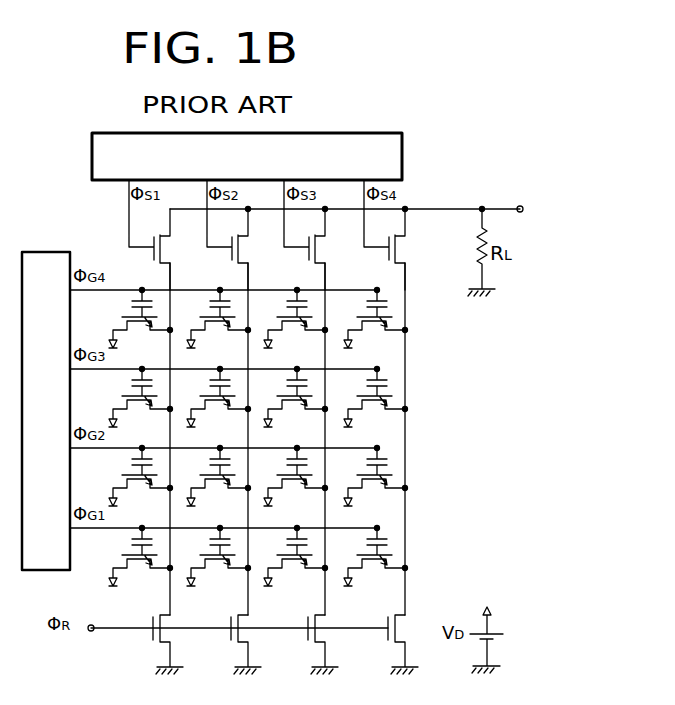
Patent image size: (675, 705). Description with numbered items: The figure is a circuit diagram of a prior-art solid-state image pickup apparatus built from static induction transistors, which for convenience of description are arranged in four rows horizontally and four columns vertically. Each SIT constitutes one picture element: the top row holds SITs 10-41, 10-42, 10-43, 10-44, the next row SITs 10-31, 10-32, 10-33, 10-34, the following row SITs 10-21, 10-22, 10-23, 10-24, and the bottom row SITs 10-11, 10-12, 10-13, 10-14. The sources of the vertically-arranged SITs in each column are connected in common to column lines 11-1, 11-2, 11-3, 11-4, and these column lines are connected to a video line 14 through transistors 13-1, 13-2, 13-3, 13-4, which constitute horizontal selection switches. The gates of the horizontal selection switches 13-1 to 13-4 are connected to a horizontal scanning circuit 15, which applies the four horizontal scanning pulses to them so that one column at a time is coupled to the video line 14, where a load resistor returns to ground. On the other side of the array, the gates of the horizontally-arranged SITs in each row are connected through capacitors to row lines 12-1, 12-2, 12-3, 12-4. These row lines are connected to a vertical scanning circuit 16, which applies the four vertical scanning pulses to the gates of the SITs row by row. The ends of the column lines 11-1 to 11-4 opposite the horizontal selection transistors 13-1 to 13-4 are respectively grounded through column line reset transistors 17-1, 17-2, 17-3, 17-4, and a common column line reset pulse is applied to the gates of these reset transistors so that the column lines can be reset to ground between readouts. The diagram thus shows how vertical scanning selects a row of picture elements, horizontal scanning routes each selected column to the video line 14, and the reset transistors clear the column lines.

The horizontal scanning circuit 15 is at (405, 153).
The vertical scanning circuit 16 is at (47, 250).
The video line 14 is at (444, 208).
The transistor (horizontal selection switch) 13-1 is at (184, 247).
The transistor (horizontal selection switch) 13-2 is at (262, 247).
The transistor (horizontal selection switch) 13-3 is at (339, 247).
The transistor (horizontal selection switch) 13-4 is at (403, 251).
The column line 11-1 is at (172, 273).
The column line 11-2 is at (250, 273).
The column line 11-3 is at (327, 273).
The column line 11-4 is at (405, 273).
The row line 12-1 is at (112, 526).
The row line 12-2 is at (112, 446).
The row line 12-3 is at (112, 367).
The row line 12-4 is at (132, 280).
The SIT 10-11 is at (142, 562).
The SIT 10-12 is at (220, 562).
The SIT 10-13 is at (297, 562).
The SIT 10-14 is at (377, 562).
The SIT 10-21 is at (142, 482).
The SIT 10-22 is at (220, 482).
The SIT 10-23 is at (297, 482).
The SIT 10-24 is at (377, 482).
The SIT 10-31 is at (142, 403).
The SIT 10-32 is at (220, 403).
The SIT 10-33 is at (297, 403).
The SIT 10-34 is at (377, 403).
The SIT 10-41 is at (142, 324).
The SIT 10-42 is at (220, 324).
The SIT 10-43 is at (297, 324).
The SIT 10-44 is at (377, 324).
The column line reset transistor 17-1 is at (143, 640).
The column line reset transistor 17-2 is at (228, 639).
The column line reset transistor 17-3 is at (305, 639).
The column line reset transistor 17-4 is at (385, 639).